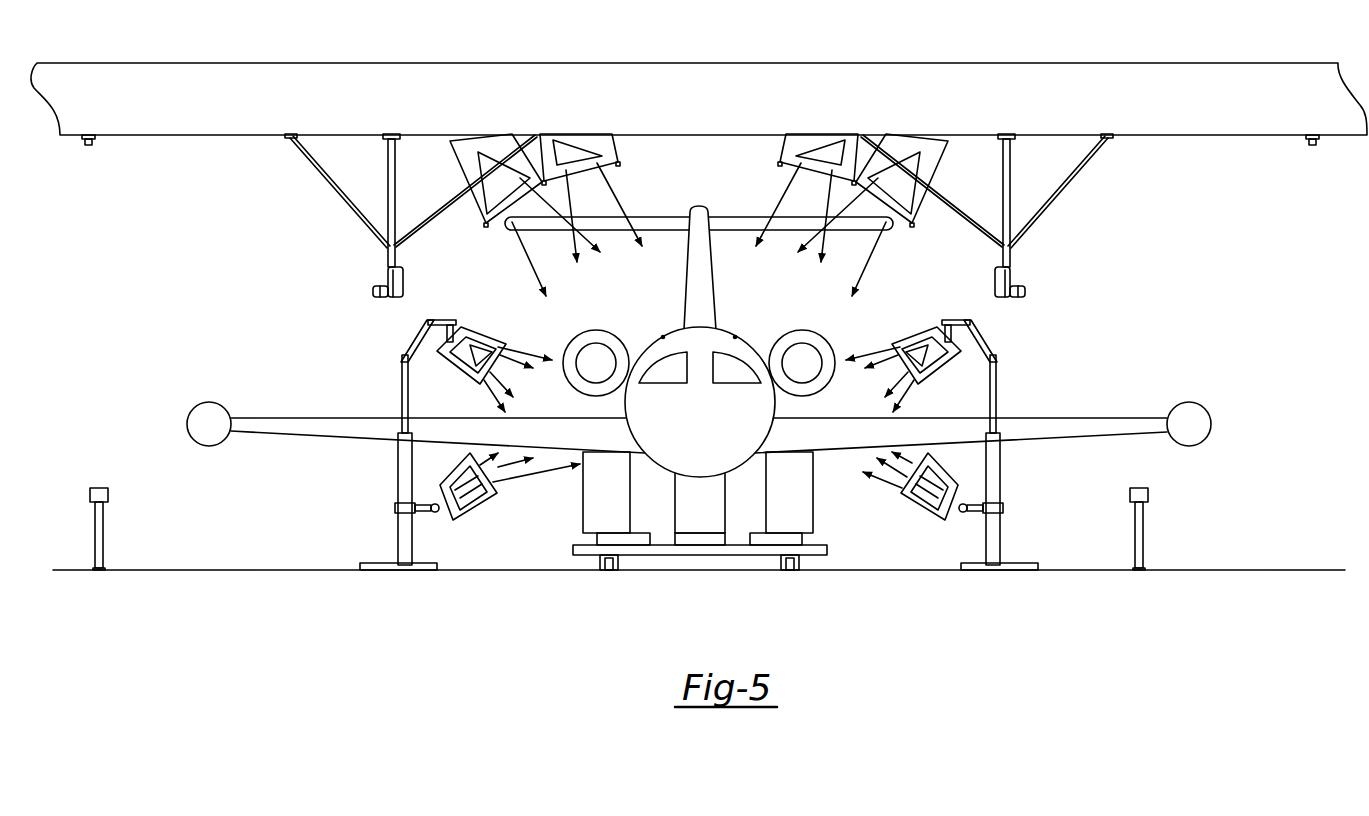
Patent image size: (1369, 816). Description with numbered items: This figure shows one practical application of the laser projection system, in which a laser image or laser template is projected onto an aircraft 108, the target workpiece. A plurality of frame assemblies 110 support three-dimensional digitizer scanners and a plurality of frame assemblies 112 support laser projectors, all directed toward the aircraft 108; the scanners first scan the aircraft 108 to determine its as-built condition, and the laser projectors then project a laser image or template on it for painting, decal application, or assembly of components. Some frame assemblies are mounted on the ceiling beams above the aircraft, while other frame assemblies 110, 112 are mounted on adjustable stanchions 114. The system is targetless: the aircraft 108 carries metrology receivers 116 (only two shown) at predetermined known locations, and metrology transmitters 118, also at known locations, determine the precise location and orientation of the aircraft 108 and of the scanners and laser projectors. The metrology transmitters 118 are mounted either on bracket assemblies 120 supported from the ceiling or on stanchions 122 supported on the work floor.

The aircraft 108 is at (729, 304).
The frame assemblies 110 is at (599, 158).
The frame assemblies 112 is at (478, 140).
The adjustable stanchions 114 is at (405, 483).
The metrology receivers 116 is at (663, 337).
The metrology transmitters 118 is at (391, 305).
The bracket assemblies 120 is at (356, 223).
The stanchions 122 is at (103, 523).